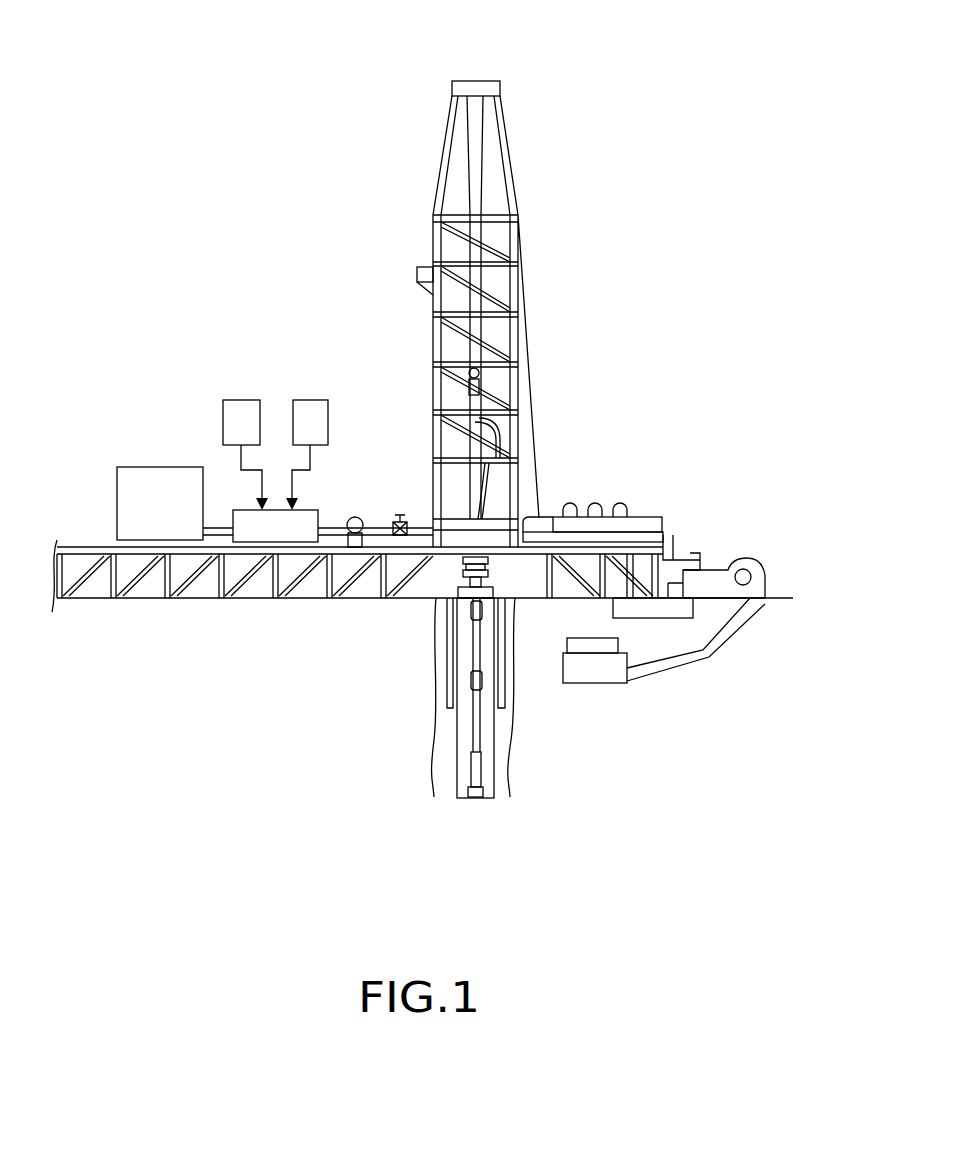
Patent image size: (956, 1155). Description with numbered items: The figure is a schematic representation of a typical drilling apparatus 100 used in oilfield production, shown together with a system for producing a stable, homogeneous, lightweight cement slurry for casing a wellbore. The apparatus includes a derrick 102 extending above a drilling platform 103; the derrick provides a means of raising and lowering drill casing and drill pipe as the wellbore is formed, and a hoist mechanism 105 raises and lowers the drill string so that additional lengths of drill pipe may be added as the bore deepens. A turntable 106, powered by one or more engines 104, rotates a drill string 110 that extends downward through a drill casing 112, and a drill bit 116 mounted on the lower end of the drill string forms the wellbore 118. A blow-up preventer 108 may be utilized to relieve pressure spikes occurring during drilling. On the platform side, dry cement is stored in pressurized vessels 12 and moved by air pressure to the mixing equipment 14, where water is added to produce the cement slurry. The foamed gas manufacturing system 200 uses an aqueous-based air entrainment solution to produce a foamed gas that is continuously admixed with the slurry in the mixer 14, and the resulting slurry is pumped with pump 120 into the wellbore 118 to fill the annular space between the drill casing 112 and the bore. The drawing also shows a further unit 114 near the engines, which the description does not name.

The drilling apparatus 100 is at (266, 113).
The derrick 102 is at (507, 127).
The hoist mechanism 105 is at (487, 190).
The drilling platform 103 is at (284, 600).
The foamed gas manufacturing system 200 is at (143, 467).
The pressurized vessels 12 is at (237, 398).
The mixing equipment 14 is at (307, 508).
The pump 120 is at (355, 548).
The turntable 106 is at (490, 547).
The engines 104 is at (745, 560).
The mud pit / control unit 114 is at (600, 683).
The blow-up preventer 108 is at (467, 575).
The drill casing 112 is at (502, 702).
The drill string 110 is at (475, 737).
The drill bit 116 is at (490, 800).
The wellbore 118 is at (433, 783).